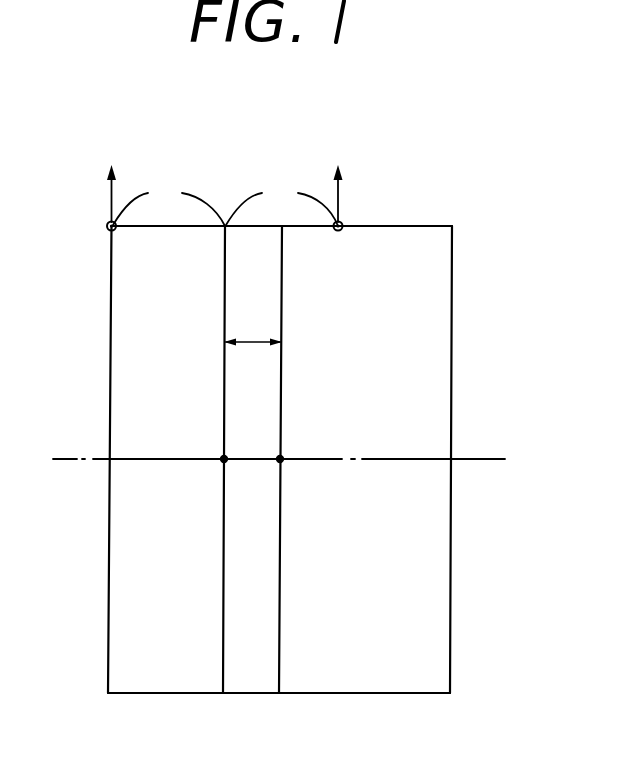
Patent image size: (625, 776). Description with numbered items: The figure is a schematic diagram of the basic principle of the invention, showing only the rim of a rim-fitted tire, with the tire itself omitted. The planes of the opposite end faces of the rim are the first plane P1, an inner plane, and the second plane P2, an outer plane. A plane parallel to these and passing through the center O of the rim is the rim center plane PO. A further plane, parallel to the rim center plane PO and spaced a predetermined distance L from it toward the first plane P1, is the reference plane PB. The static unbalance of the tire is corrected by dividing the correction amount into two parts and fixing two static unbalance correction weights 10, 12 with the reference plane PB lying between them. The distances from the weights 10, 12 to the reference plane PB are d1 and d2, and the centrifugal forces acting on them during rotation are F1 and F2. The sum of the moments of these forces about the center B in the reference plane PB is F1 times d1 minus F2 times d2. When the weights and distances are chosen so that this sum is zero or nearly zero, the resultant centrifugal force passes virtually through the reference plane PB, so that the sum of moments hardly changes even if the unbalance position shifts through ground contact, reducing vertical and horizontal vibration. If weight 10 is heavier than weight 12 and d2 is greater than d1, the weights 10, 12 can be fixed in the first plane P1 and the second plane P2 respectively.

The static unbalance correction weight 10 is at (108, 222).
The static unbalance correction weight 12 is at (342, 222).
The center in the reference plane B is at (222, 462).
The center of the rim O is at (282, 462).
The predetermined distance L is at (253, 325).
The centrifugal force F1 is at (114, 176).
The centrifugal force F2 is at (338, 176).
The distance d1 is at (169, 205).
The distance d2 is at (282, 205).
The first plane P1 is at (108, 695).
The reference plane PB is at (223, 695).
The rim center plane PO is at (279, 695).
The second plane P2 is at (450, 695).